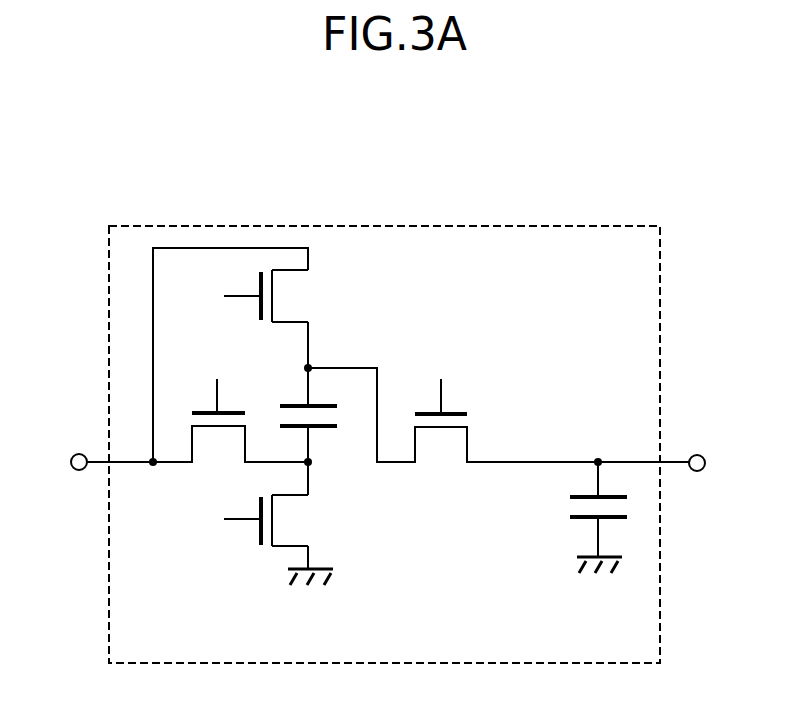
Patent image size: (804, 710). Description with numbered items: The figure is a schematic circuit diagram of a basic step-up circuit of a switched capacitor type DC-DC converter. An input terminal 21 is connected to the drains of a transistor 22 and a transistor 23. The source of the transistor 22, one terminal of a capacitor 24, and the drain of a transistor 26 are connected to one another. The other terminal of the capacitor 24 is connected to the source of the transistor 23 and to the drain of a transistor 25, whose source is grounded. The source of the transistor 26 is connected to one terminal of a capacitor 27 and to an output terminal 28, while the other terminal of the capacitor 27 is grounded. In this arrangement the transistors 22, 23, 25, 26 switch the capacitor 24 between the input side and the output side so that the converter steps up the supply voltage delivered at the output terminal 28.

The input terminal 21 is at (79, 453).
The transistor 22 is at (303, 297).
The transistor 23 is at (215, 456).
The capacitor 24 is at (290, 402).
The transistor 25 is at (317, 519).
The transistor 26 is at (467, 427).
The capacitor 27 is at (567, 525).
The output terminal 28 is at (699, 454).